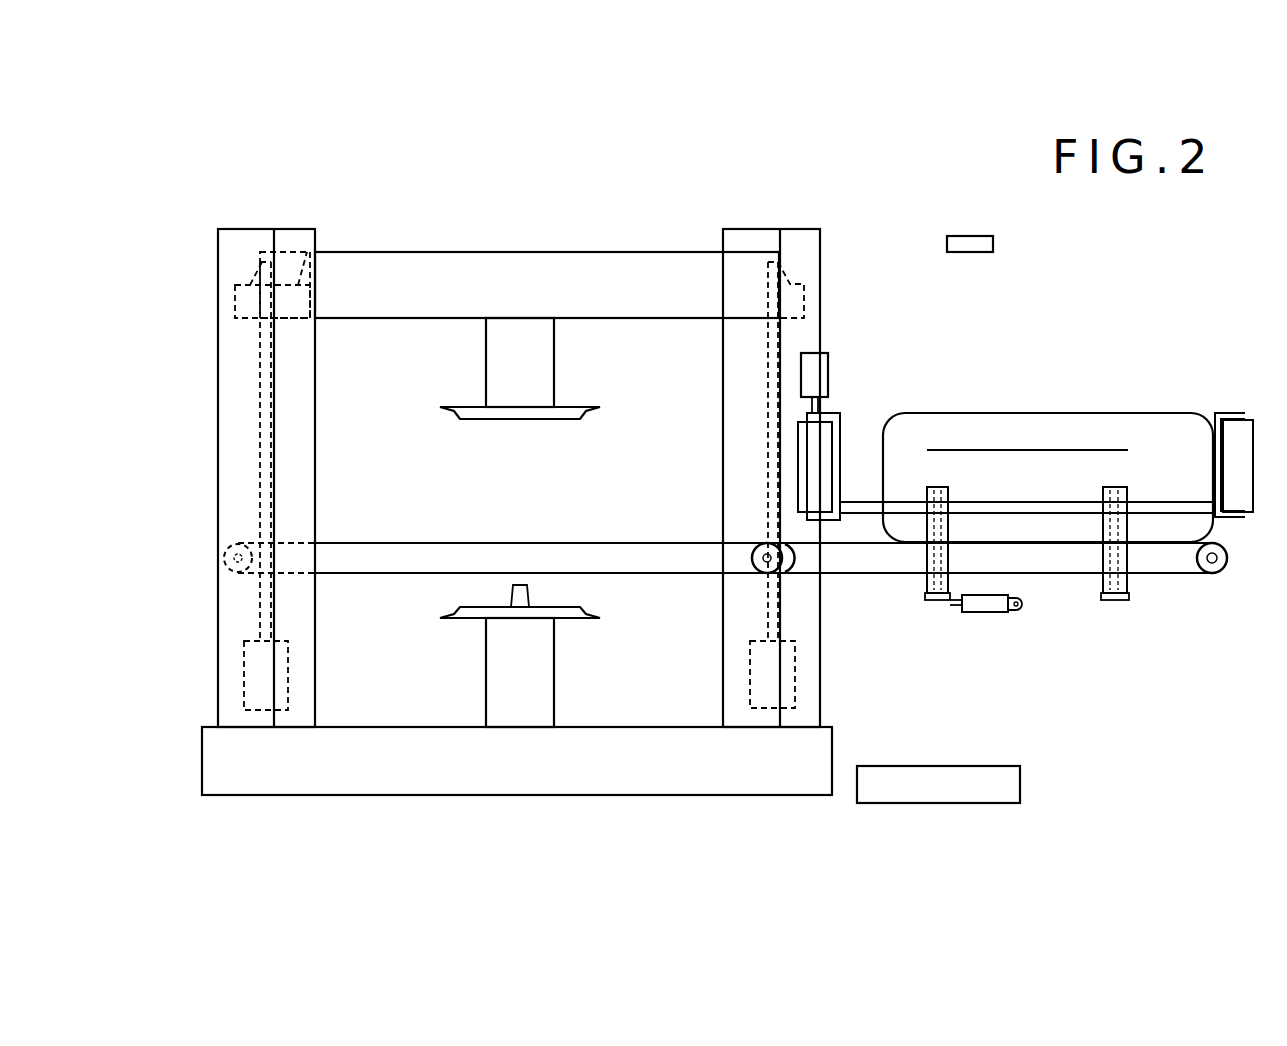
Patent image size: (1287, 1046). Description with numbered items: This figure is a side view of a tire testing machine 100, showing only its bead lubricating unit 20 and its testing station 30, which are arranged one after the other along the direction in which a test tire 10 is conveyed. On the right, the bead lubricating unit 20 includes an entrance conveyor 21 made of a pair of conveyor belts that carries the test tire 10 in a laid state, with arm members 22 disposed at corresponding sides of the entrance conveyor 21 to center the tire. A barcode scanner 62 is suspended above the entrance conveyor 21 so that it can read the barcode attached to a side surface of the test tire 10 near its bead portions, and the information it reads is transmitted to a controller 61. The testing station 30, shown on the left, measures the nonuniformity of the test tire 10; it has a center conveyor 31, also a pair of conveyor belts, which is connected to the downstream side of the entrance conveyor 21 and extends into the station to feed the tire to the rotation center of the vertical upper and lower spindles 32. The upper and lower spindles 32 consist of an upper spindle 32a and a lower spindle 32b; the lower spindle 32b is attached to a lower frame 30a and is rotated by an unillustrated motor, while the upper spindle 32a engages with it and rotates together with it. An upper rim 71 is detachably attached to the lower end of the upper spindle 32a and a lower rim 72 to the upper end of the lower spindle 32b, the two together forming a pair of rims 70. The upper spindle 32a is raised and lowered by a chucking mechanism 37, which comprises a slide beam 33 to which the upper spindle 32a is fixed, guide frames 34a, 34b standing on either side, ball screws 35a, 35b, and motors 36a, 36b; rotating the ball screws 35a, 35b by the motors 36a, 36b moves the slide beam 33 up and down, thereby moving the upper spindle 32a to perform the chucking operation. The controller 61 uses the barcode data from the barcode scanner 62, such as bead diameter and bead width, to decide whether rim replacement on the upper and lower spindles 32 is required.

The tire testing machine 100 is at (890, 183).
The testing station 30 is at (520, 210).
The lower frame 30a is at (495, 775).
The center conveyor 31 is at (393, 545).
The upper and lower spindles 32 is at (448, 522).
The upper spindle 32a is at (488, 364).
The lower spindle 32b is at (488, 668).
The slide beam 33 is at (415, 260).
The guide frame 34a is at (798, 240).
The guide frame 34b is at (246, 238).
The ball screw 35a is at (771, 331).
The ball screw 35b is at (260, 348).
The motor 36a is at (795, 674).
The motor 36b is at (244, 673).
The chucking mechanism 37 is at (200, 475).
The pair of rims 70 is at (549, 512).
The upper rim 71 is at (527, 420).
The lower rim 72 is at (560, 607).
The bead lubricating unit 20 is at (1113, 333).
The test tire 10 is at (1033, 413).
The entrance conveyor 21 is at (1162, 575).
The arm members 22 is at (865, 505).
The controller 61 is at (1020, 784).
The barcode scanner 62 is at (965, 236).